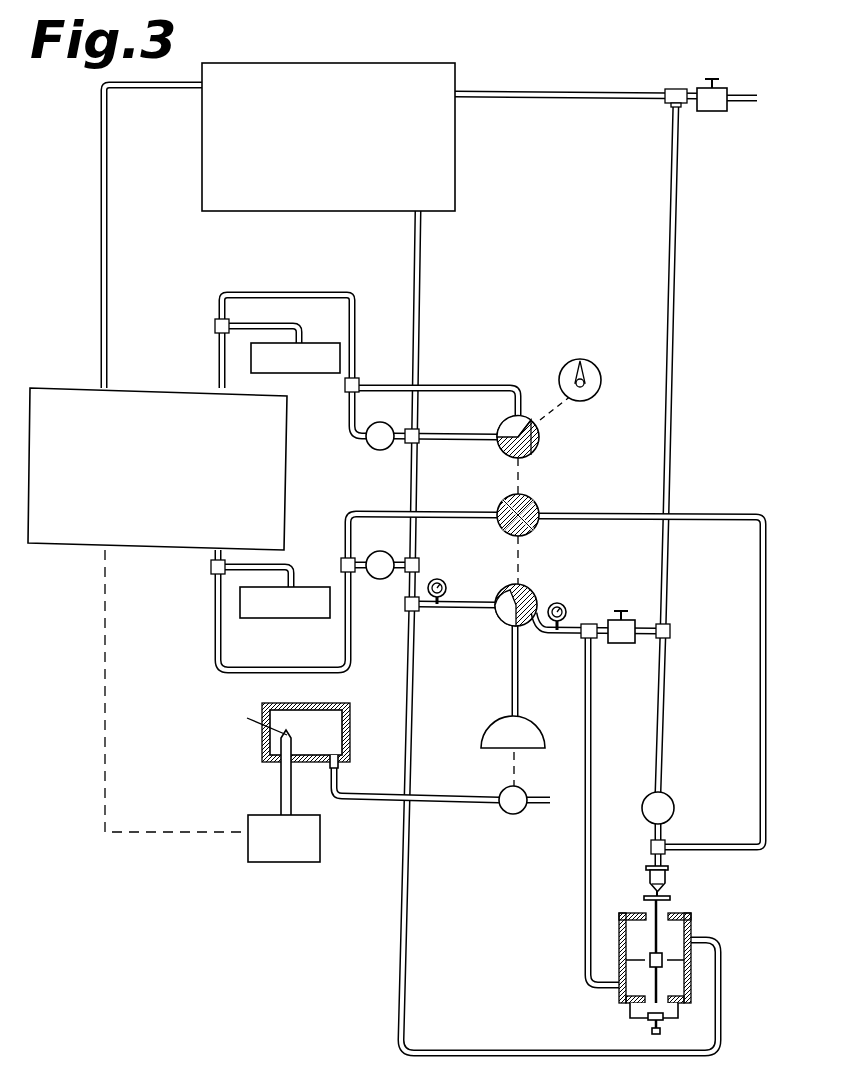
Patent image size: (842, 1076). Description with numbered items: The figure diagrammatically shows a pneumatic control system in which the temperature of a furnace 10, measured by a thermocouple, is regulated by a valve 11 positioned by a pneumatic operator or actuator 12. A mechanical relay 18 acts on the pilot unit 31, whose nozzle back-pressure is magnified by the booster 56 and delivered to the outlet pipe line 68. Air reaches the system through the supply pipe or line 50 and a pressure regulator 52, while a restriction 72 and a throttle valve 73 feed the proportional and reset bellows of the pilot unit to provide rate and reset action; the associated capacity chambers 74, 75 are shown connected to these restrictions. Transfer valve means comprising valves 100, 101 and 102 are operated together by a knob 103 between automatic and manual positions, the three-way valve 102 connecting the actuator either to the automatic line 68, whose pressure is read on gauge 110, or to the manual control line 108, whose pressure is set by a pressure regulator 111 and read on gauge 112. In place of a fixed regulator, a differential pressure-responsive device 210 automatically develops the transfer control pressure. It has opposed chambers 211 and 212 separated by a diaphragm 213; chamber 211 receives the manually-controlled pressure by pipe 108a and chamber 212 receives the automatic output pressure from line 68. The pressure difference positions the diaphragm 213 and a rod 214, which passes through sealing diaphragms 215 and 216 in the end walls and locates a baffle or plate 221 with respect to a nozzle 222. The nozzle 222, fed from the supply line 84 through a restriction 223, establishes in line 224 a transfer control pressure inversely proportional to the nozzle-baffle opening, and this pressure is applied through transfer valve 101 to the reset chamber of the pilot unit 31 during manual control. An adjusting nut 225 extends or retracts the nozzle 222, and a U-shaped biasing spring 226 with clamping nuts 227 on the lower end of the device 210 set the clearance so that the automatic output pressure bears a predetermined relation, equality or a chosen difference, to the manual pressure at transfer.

The furnace 10 is at (332, 737).
The valve 11 is at (512, 815).
The pneumatic operator or actuator 12 is at (490, 723).
The mechanical relay 18 is at (295, 865).
The pilot unit 31 is at (141, 388).
The supply pipe or line 50 is at (742, 94).
The pressure regulator 52 is at (710, 112).
The pneumatic relay or booster 56 is at (491, 157).
The outlet pipe line 68 is at (421, 258).
The restriction 72 is at (377, 451).
The throttle valve 73 is at (380, 551).
The capacity 74 is at (310, 587).
The capacity 75 is at (300, 374).
The supply line 84 is at (673, 328).
The valve 100 is at (538, 450).
The transfer valve 101 is at (538, 527).
The three-way valve 102 is at (530, 587).
The knob or actuating device 103 is at (597, 402).
The manual control line 108 is at (568, 637).
The pipe 108a is at (590, 733).
The pressure gauge 110 is at (440, 579).
The pressure regulator 111 is at (623, 643).
The pressure gauge 112 is at (567, 597).
The differential pressure-responsive device 210 is at (756, 923).
The chamber 211 is at (637, 975).
The chamber 212 is at (632, 928).
The diaphragm 213 is at (675, 960).
The rod 214 is at (658, 988).
The sealing diaphragm 215 is at (647, 1007).
The sealing diaphragm 216 is at (662, 917).
The baffle or plate 221 is at (649, 896).
The nozzle 222 is at (663, 889).
The restriction 223 is at (672, 793).
The line 224 is at (732, 497).
The adjusting nut 225 is at (649, 868).
The U-shaped biasing spring 226 is at (675, 1020).
The clamping nuts 227 is at (653, 1020).